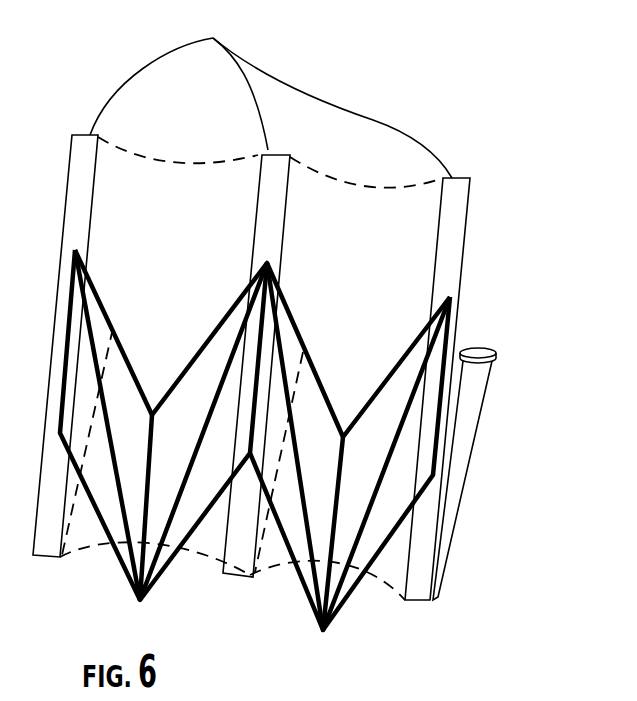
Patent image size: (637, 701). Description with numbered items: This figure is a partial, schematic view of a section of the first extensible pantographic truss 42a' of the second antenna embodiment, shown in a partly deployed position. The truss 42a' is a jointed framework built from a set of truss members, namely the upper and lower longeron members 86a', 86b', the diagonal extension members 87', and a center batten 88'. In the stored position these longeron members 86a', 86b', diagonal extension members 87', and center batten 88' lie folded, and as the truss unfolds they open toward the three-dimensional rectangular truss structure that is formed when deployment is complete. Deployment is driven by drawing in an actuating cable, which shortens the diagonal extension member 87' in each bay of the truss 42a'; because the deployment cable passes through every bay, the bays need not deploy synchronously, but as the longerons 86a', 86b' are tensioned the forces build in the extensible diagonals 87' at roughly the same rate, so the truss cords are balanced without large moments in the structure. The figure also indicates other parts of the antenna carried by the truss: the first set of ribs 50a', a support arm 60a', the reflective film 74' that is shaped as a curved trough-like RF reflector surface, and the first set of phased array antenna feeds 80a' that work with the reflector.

The first extensible pantographic truss 42a' is at (284, 325).
The first set of ribs 50a' is at (271, 91).
The reflective film 74' is at (270, 132).
The upper longeron member 86a' is at (262, 341).
The lower longeron member 86b' is at (206, 584).
The diagonal extension member 87' is at (197, 407).
The center batten 88' is at (255, 463).
The first set of phased array antenna feeds 80a' is at (500, 321).
The support arm 60a' is at (504, 480).